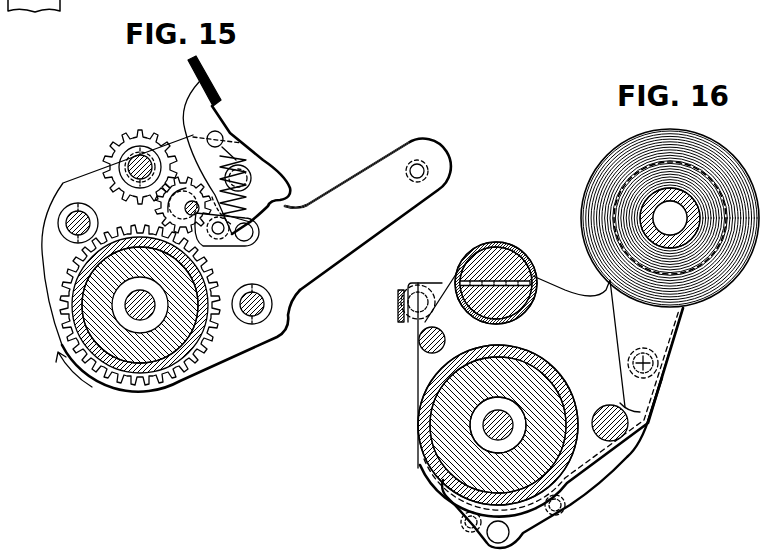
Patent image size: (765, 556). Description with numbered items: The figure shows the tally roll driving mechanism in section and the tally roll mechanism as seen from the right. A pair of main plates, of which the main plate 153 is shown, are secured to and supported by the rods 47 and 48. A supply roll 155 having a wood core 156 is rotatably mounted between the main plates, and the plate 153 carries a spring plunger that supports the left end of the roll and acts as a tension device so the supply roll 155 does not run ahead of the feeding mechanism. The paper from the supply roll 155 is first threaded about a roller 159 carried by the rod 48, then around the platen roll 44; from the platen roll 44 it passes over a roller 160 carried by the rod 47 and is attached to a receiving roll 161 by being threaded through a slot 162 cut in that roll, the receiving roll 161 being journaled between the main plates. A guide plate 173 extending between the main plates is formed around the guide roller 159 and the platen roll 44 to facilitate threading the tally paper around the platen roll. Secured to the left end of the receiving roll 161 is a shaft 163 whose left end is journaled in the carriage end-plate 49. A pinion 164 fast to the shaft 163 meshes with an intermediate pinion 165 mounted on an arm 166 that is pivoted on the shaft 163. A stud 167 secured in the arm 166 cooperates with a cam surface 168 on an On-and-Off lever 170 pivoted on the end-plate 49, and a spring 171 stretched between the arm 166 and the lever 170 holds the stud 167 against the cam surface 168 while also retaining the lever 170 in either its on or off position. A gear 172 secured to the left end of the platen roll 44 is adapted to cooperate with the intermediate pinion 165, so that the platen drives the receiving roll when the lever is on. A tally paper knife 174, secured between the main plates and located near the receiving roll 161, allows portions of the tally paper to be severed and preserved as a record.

In FIG. 15, the platen roll 44 is at (80, 317).
In FIG. 16, the platen roll 44 is at (421, 395).
In FIG. 15, the rod 47 is at (63, 221).
In FIG. 16, the rod 47 is at (417, 342).
In FIG. 15, the rod 48 is at (255, 297).
In FIG. 16, the rod 48 is at (608, 406).
In FIG. 15, the carriage end-plate 49 is at (360, 183).
In FIG. 16, the main plate 153 is at (667, 330).
In FIG. 16, the supply roll 155 is at (715, 156).
In FIG. 16, the wood core 156 is at (642, 203).
In FIG. 16, the roller 159 is at (627, 406).
In FIG. 16, the roller 160 is at (445, 340).
In FIG. 16, the receiving roll 161 is at (531, 236).
In FIG. 16, the slot 162 is at (457, 272).
In FIG. 15, the shaft 163 is at (124, 145).
In FIG. 15, the pinion 164 is at (128, 156).
In FIG. 15, the intermediate pinion 165 is at (185, 200).
In FIG. 15, the arm 166 is at (254, 229).
In FIG. 15, the stud 167 is at (215, 245).
In FIG. 15, the cam surface 168 is at (272, 200).
In FIG. 15, the On-and-Off lever 170 is at (192, 97).
In FIG. 15, the spring 171 is at (225, 148).
In FIG. 15, the gear 172 is at (167, 384).
In FIG. 16, the guide plate 173 is at (607, 462).
In FIG. 16, the tally paper knife 174 is at (397, 312).